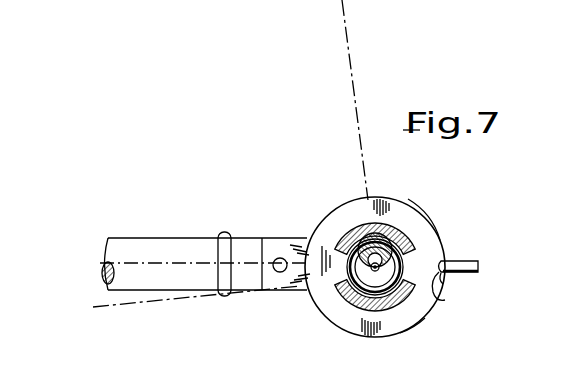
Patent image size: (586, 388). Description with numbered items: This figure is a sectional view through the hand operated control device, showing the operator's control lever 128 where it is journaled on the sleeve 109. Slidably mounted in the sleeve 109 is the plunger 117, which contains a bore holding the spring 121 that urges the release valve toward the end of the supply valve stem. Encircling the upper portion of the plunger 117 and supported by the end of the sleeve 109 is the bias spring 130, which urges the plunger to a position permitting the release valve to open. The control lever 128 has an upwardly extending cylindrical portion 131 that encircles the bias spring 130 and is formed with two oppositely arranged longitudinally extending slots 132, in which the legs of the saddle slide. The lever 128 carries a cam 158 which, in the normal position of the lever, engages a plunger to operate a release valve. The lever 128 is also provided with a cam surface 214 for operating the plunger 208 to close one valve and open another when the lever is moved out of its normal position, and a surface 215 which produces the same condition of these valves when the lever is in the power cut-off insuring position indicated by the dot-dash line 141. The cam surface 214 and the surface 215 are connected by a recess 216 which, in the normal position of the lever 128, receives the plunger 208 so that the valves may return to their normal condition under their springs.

The sleeve 109 is at (352, 228).
The plunger 117 is at (352, 312).
The spring 121 is at (350, 298).
The operator's control lever 128 is at (180, 246).
The bias spring 130 is at (385, 312).
The cylindrical portion 131 is at (395, 226).
The slots 132 is at (325, 252).
The dot-dash line 141 is at (348, 42).
The cam 158 is at (443, 283).
The plunger 208 is at (480, 265).
The cam surface 214 is at (430, 238).
The surface 215 is at (412, 323).
The recess 216 is at (437, 299).